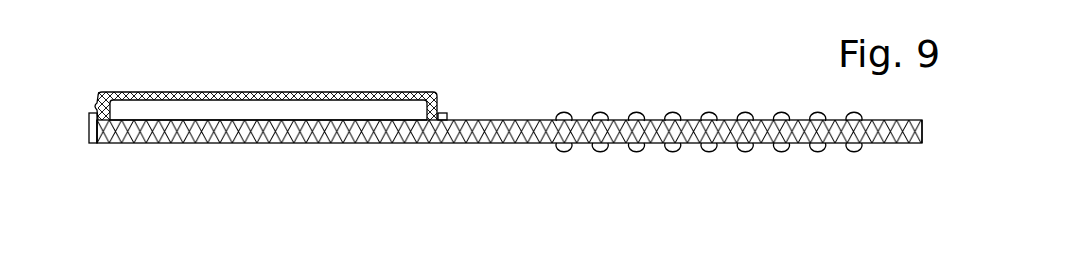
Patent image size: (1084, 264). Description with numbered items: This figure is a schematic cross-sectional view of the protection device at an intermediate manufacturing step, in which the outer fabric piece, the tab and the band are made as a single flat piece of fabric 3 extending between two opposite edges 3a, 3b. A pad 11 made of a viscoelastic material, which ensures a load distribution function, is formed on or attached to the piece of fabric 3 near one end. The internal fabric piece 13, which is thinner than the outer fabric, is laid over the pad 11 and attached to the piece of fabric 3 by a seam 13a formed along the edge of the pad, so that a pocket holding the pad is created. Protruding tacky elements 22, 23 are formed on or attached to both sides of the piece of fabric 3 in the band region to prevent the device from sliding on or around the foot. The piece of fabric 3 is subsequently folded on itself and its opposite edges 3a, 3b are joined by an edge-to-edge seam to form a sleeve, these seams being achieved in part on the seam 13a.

The piece of fabric 3 is at (293, 145).
The edge of the piece of fabric 3a is at (922, 133).
The edge of the piece of fabric 3b is at (89, 127).
The pad 11 is at (310, 110).
The internal fabric piece 13 is at (195, 92).
The seam 13a is at (97, 145).
The tacky elements 22 is at (746, 150).
The tacky elements 23 is at (746, 113).